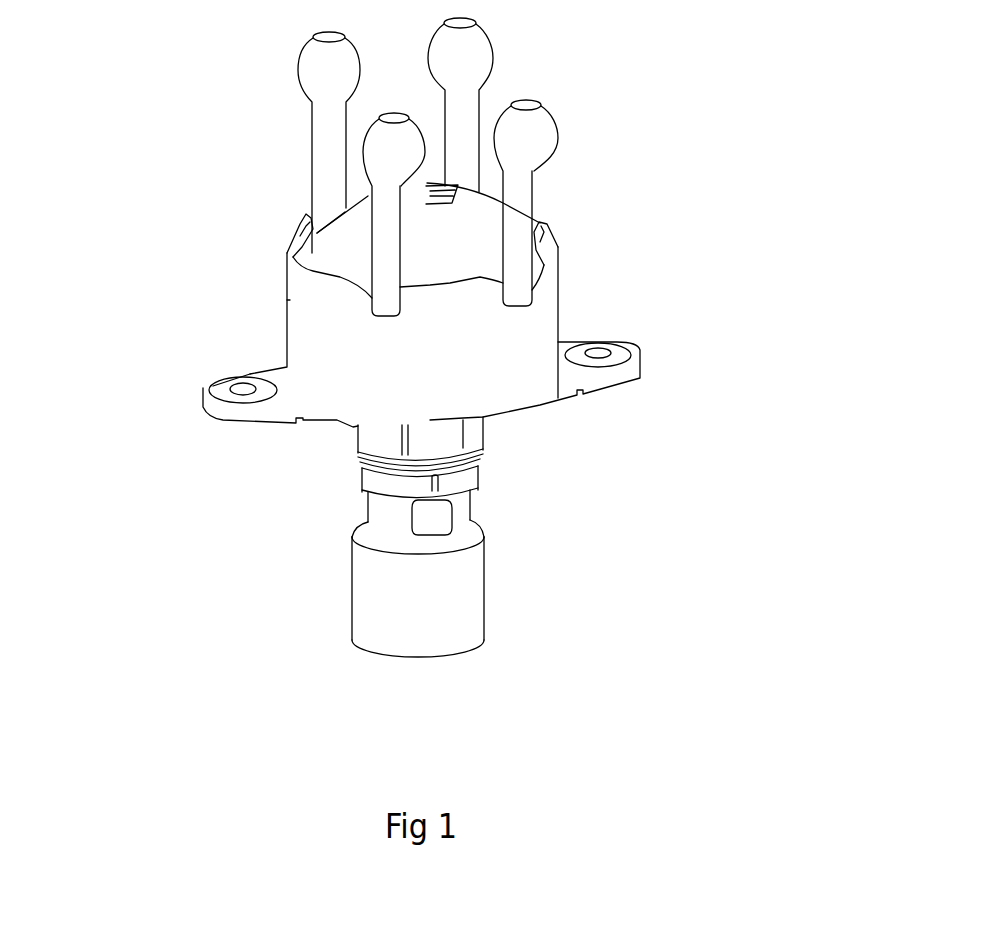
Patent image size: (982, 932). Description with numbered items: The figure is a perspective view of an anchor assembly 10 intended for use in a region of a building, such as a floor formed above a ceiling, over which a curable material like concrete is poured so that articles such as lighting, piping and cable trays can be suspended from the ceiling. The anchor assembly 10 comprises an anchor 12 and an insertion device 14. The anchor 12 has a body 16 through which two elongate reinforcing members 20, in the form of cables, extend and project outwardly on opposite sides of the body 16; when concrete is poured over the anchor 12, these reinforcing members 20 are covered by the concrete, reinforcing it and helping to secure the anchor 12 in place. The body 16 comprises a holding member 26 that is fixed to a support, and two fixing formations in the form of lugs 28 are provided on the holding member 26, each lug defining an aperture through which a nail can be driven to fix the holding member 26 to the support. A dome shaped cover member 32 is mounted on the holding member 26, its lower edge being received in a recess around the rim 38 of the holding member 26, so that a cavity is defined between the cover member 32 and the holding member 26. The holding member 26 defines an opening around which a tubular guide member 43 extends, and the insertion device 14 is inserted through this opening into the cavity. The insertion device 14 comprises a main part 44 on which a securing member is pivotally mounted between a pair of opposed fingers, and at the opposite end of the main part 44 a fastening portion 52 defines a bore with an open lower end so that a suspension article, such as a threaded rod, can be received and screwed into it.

The anchor assembly 10 is at (272, 497).
The anchor 12 is at (271, 277).
The insertion device 14 is at (490, 571).
The body 16 is at (460, 335).
The elongate reinforcing members 20 is at (332, 157).
The holding member 26 is at (305, 350).
The lugs 28 is at (222, 396).
The cover member 32 is at (347, 236).
The rim 38 is at (392, 405).
The tubular guide member 43 is at (455, 437).
The main part 44 is at (453, 503).
The fastening portion 52 is at (397, 623).